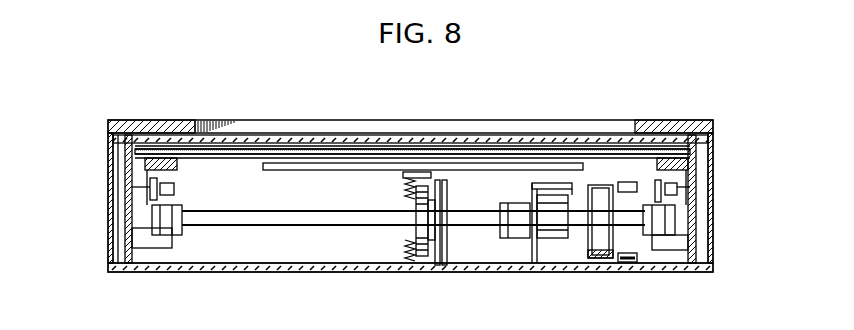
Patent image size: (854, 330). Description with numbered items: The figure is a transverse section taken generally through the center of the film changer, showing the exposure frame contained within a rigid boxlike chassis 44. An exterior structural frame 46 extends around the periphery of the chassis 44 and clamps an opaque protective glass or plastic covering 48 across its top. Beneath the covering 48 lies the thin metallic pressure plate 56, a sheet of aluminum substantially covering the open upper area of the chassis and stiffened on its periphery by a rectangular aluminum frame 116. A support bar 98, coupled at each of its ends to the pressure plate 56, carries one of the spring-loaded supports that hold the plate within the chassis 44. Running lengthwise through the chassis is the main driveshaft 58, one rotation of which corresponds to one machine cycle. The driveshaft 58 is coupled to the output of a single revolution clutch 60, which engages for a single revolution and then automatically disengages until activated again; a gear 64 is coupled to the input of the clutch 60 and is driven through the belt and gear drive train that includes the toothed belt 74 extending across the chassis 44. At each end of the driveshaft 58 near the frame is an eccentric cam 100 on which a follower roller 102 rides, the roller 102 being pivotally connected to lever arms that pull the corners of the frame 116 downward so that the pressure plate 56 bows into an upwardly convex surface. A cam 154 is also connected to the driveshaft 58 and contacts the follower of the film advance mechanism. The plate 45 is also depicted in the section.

The chassis 44 is at (712, 270).
The exterior structural frame 46 is at (670, 128).
The protective covering 48 is at (437, 140).
The pressure plate 56 is at (334, 150).
The support bar 98 is at (538, 168).
The rectangular aluminum frame 116 is at (150, 163).
The follower roller 102 is at (152, 190).
The eccentric cam 100 is at (142, 219).
The main driveshaft 58 is at (261, 222).
The cam 154 is at (412, 228).
The mounting plate 45 is at (443, 250).
The single revolution clutch 60 is at (522, 241).
The gear 64 is at (598, 242).
The toothed belt 74 is at (630, 263).